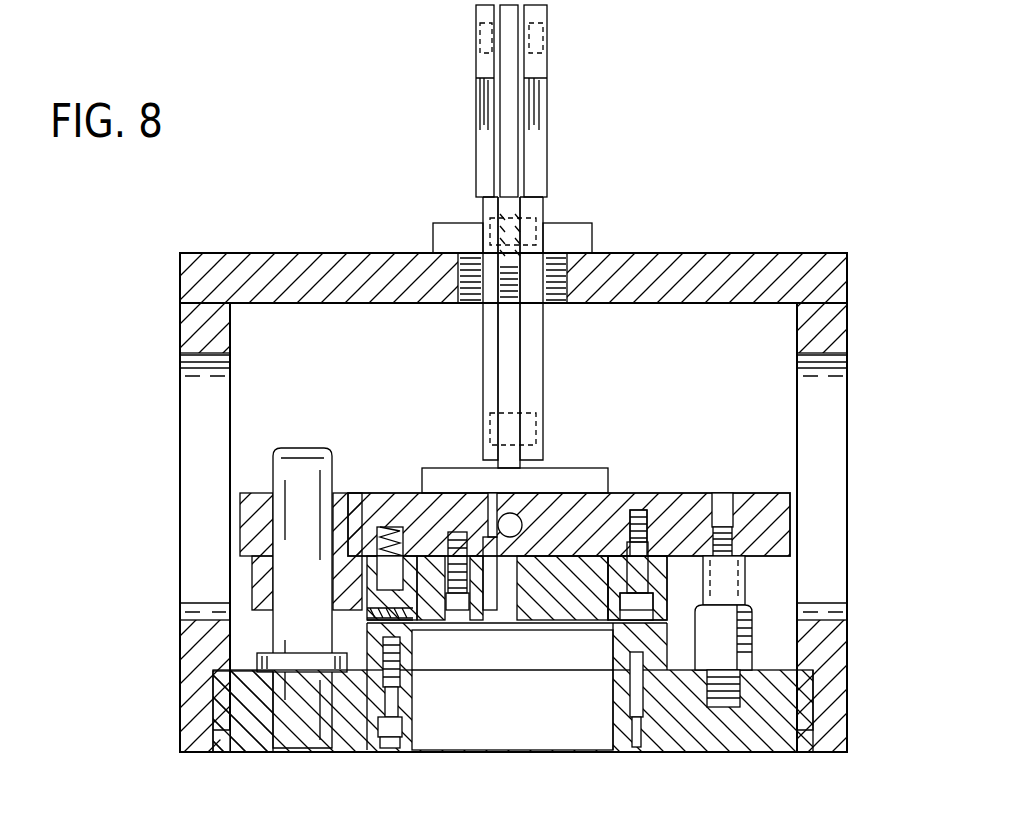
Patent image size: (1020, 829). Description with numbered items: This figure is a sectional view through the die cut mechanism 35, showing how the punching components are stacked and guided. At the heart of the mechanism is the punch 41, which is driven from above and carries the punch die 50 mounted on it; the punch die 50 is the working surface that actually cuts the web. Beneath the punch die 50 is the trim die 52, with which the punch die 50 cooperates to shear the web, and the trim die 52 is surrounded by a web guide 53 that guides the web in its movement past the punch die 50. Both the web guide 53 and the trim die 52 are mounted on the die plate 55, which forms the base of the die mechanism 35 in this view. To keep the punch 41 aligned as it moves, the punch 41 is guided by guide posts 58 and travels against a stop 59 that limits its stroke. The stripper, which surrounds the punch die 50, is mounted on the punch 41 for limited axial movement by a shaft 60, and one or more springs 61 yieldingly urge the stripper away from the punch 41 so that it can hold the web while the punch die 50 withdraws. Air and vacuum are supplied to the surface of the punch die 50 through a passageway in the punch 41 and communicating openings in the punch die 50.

The die cut mechanism 35 is at (690, 487).
The punch 41 is at (372, 493).
The punch die 50 is at (578, 623).
The trim die 52 is at (657, 557).
The web guide 53 is at (612, 655).
The die plate 55 is at (763, 748).
The guide posts 58 is at (302, 468).
The stop 59 is at (748, 625).
The shaft 60 is at (622, 548).
The springs 61 is at (397, 500).